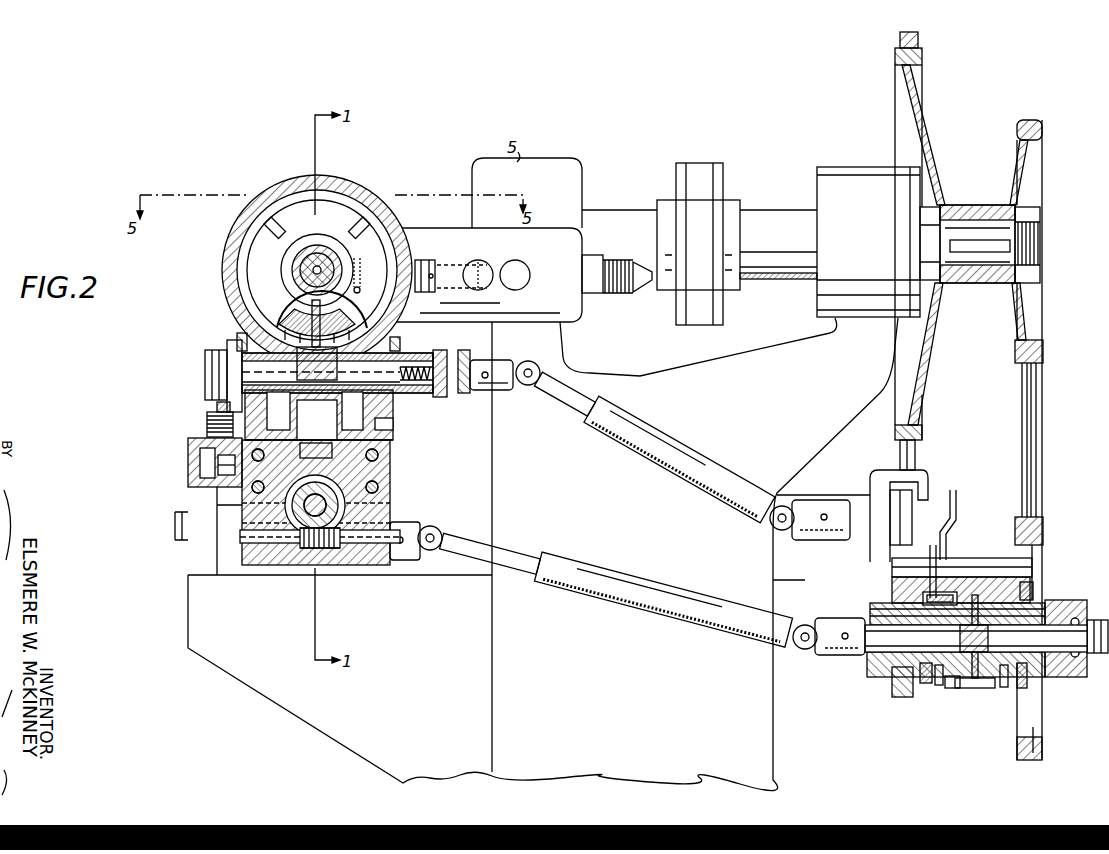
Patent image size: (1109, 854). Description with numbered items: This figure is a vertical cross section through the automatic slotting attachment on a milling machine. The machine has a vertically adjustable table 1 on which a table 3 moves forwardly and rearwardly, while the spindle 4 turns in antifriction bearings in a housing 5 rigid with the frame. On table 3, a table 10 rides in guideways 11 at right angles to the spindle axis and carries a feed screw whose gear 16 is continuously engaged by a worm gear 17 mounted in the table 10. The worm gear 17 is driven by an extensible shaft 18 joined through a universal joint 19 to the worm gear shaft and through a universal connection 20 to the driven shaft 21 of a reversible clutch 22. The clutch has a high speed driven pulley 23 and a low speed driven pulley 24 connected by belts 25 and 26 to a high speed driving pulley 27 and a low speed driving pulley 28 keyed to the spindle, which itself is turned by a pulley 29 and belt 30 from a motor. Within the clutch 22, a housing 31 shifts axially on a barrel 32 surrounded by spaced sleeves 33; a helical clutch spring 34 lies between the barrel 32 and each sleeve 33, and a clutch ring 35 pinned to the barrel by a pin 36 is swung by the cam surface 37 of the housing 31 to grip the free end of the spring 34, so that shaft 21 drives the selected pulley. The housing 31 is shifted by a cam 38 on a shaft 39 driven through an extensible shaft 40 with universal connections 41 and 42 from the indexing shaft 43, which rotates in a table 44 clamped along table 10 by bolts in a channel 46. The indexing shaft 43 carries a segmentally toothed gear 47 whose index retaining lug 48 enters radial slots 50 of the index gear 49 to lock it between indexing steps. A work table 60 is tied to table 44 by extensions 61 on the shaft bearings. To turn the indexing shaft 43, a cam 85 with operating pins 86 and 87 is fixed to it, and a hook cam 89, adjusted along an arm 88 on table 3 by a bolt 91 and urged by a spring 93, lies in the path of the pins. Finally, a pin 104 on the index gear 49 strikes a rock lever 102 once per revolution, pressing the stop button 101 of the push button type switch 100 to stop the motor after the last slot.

The table 1 is at (266, 692).
The table 3 is at (228, 571).
The spindle 4 is at (395, 204).
The housing 5 is at (527, 193).
The table 10 is at (385, 466).
The guideways 11 is at (365, 508).
The gear 16 is at (345, 480).
The worm gear 17 is at (312, 550).
The extensible shaft 18 is at (606, 598).
The universal joint 19 is at (440, 524).
The universal connection 20 is at (812, 654).
The driven shaft 21 is at (976, 638).
The reversible clutch 22 is at (987, 573).
The high speed driven pulley 23 is at (890, 686).
The low speed driven pulley 24 is at (1043, 538).
The belt 25 is at (916, 452).
The belt 26 is at (1035, 412).
The high speed driving pulley 27 is at (895, 430).
The low speed driving pulley 28 is at (1035, 345).
The pulley 29 is at (723, 184).
The belt 30 is at (700, 163).
The housing 31 is at (1008, 556).
The barrel 32 is at (972, 688).
The sleeves 33 is at (938, 688).
The helical clutch spring 34 is at (950, 690).
The clutch ring 35 is at (935, 583).
The pin 36 is at (962, 585).
The cam surface 37 is at (920, 680).
The cam 38 is at (956, 492).
The shaft 39 is at (925, 503).
The extensible shaft 40 is at (670, 440).
The universal connection 41 is at (770, 530).
The universal connection 42 is at (536, 392).
The indexing shaft 43 is at (412, 368).
The table 44 is at (385, 440).
The channel 46 is at (330, 433).
The segmentally toothed gear 47 is at (318, 408).
The index retaining lug 48 is at (352, 318).
The index gear 49 is at (293, 324).
The radial slots 50 is at (309, 228).
The work table 60 is at (385, 427).
The extensions 61 is at (237, 345).
The cam 85 is at (232, 375).
The operating pin 86 is at (225, 345).
The operating pin 87 is at (217, 407).
The arm 88 is at (188, 462).
The hook cam 89 is at (210, 396).
The bolt 91 is at (224, 478).
The spring 93 is at (207, 425).
The push button type switch 100 is at (538, 318).
The stop button 101 is at (490, 260).
The rock lever 102 is at (447, 258).
The pin 104 is at (358, 289).